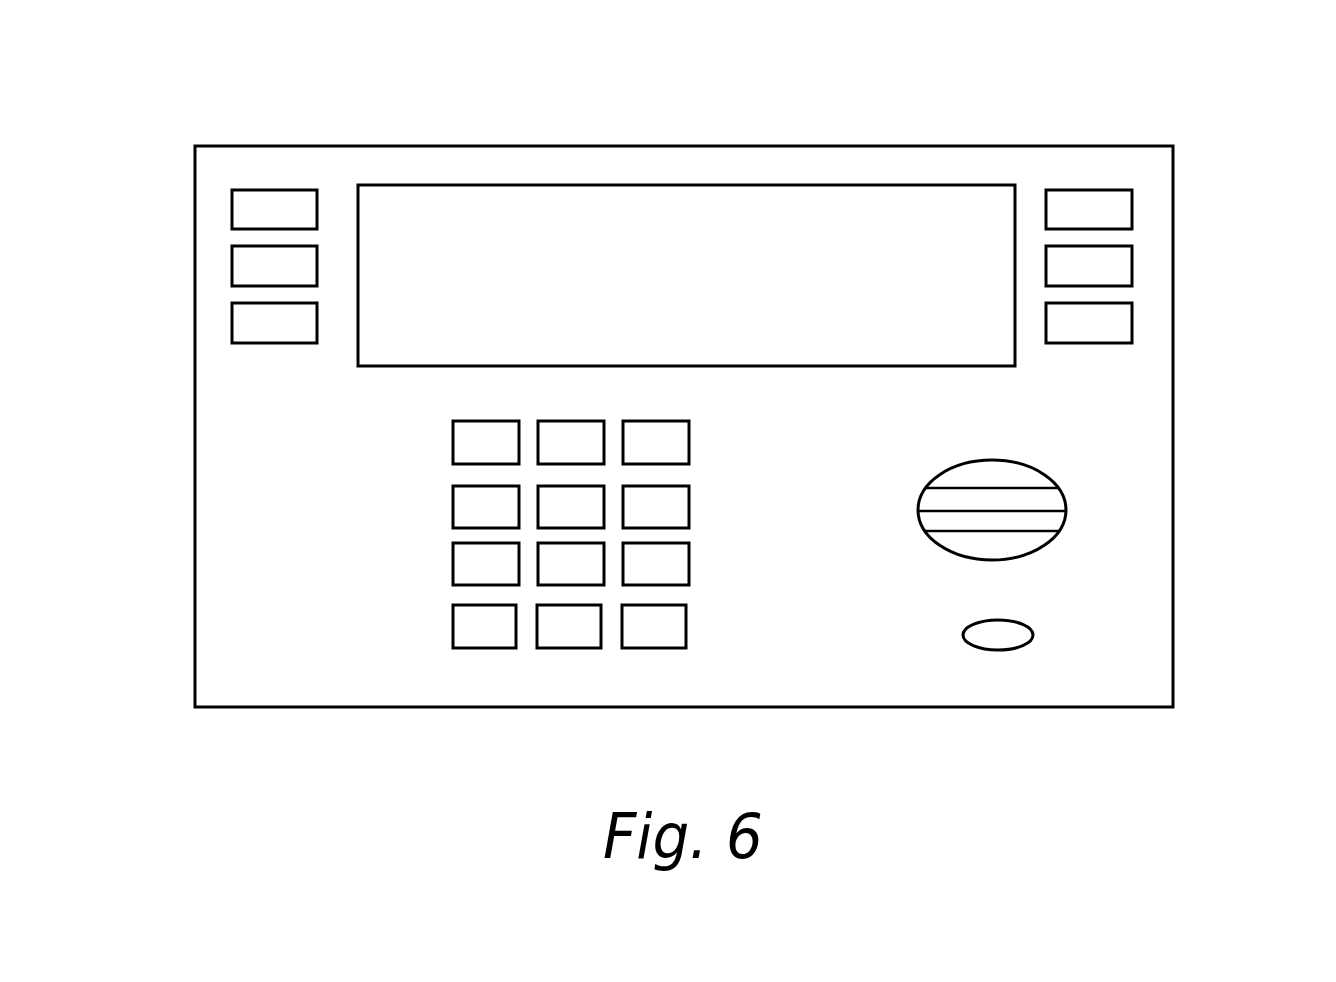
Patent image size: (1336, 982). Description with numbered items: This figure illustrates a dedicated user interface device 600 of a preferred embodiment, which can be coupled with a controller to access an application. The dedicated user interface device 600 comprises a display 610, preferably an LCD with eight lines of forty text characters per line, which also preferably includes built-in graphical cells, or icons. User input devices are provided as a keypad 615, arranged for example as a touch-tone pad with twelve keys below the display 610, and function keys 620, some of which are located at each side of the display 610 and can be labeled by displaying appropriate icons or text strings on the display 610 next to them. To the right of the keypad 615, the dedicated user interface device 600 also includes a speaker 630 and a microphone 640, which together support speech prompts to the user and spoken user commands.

The telephone device housing 600 is at (1173, 354).
The display 610 is at (743, 210).
The keypad 615 is at (453, 515).
The soft keys 620 is at (240, 323).
The speaker 630 is at (1063, 527).
The microphone 640 is at (963, 639).